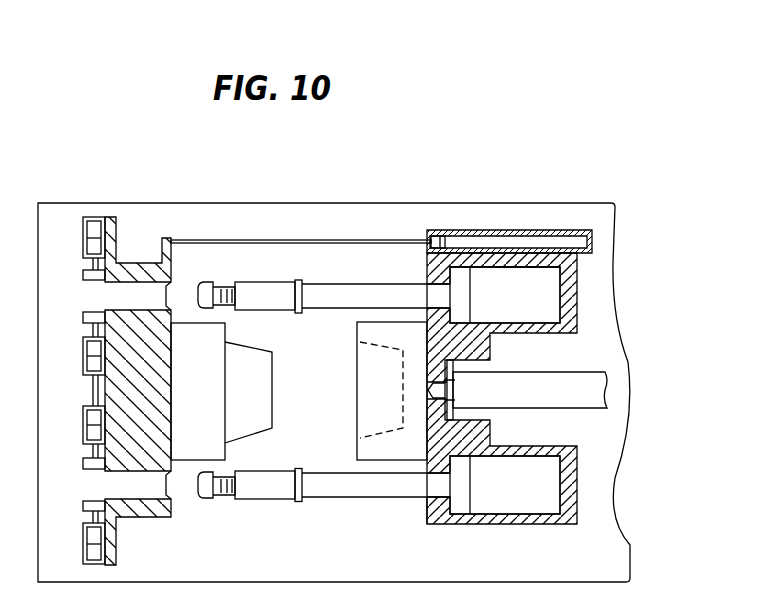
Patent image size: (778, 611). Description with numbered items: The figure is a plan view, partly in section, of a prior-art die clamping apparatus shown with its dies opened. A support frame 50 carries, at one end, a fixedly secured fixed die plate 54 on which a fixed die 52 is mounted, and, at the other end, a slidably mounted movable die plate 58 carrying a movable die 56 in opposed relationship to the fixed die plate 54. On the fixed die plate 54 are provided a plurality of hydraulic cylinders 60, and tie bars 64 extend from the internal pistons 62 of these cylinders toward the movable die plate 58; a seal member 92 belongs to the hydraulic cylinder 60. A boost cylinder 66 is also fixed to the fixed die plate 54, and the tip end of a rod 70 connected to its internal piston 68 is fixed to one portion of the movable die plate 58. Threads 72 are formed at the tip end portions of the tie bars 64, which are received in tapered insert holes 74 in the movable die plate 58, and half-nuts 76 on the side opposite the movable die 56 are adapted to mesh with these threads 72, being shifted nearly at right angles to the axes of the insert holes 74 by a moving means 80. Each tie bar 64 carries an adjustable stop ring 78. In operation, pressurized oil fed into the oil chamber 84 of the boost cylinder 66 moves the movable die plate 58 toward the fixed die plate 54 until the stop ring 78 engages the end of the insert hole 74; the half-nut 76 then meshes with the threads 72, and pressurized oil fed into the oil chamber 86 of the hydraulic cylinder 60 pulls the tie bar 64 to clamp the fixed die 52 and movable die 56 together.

The support frame 50 is at (613, 547).
The fixed die 52 is at (367, 409).
The fixed die plate 54 is at (482, 354).
The movable die 56 is at (265, 361).
The movable die plate 58 is at (100, 402).
The hydraulic cylinder 60 is at (540, 297).
The internal piston 62 is at (466, 292).
The tie bar 64 is at (274, 288).
The boost cylinder 66 is at (500, 247).
The internal piston 68 is at (449, 275).
The rod 70 is at (209, 239).
The threads 72 is at (223, 284).
The insert hole 74 is at (146, 286).
The half-nut 76 is at (83, 275).
The stop ring 78 is at (300, 281).
The moving means 80 is at (83, 240).
The oil chamber 84 is at (436, 258).
The oil chamber 86 is at (428, 278).
The seal member 92 is at (428, 503).